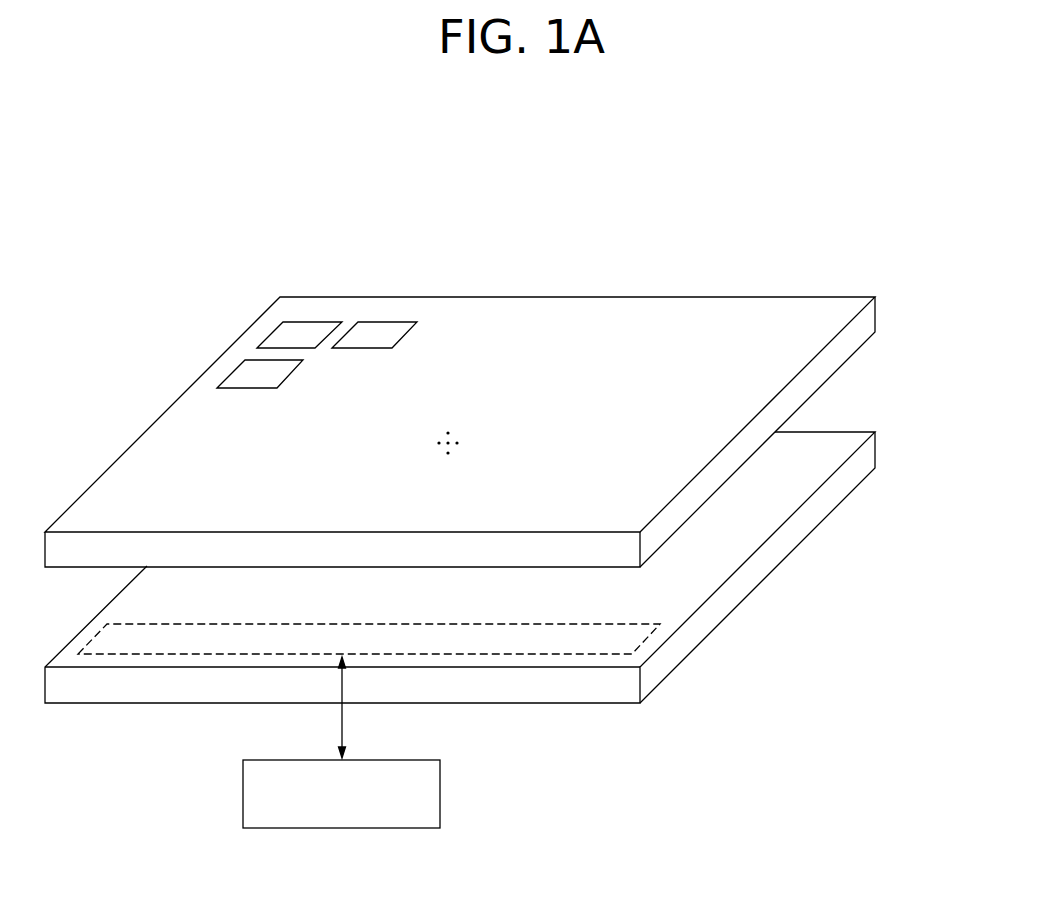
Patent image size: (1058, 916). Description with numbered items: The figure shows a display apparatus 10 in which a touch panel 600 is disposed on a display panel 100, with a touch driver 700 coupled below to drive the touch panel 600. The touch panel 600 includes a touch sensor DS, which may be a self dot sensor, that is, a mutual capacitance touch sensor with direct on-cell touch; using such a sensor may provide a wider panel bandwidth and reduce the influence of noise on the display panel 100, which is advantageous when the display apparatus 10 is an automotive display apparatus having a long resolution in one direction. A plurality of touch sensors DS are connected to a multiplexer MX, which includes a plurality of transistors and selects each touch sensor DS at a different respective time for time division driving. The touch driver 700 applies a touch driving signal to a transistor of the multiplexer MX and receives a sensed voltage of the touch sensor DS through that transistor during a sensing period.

The display apparatus 10 is at (530, 242).
The touch panel 600 is at (501, 432).
The display panel 100 is at (501, 567).
The touch driver 700 is at (441, 793).
The touch sensor DS is at (299, 335).
The multiplexer MX is at (369, 641).